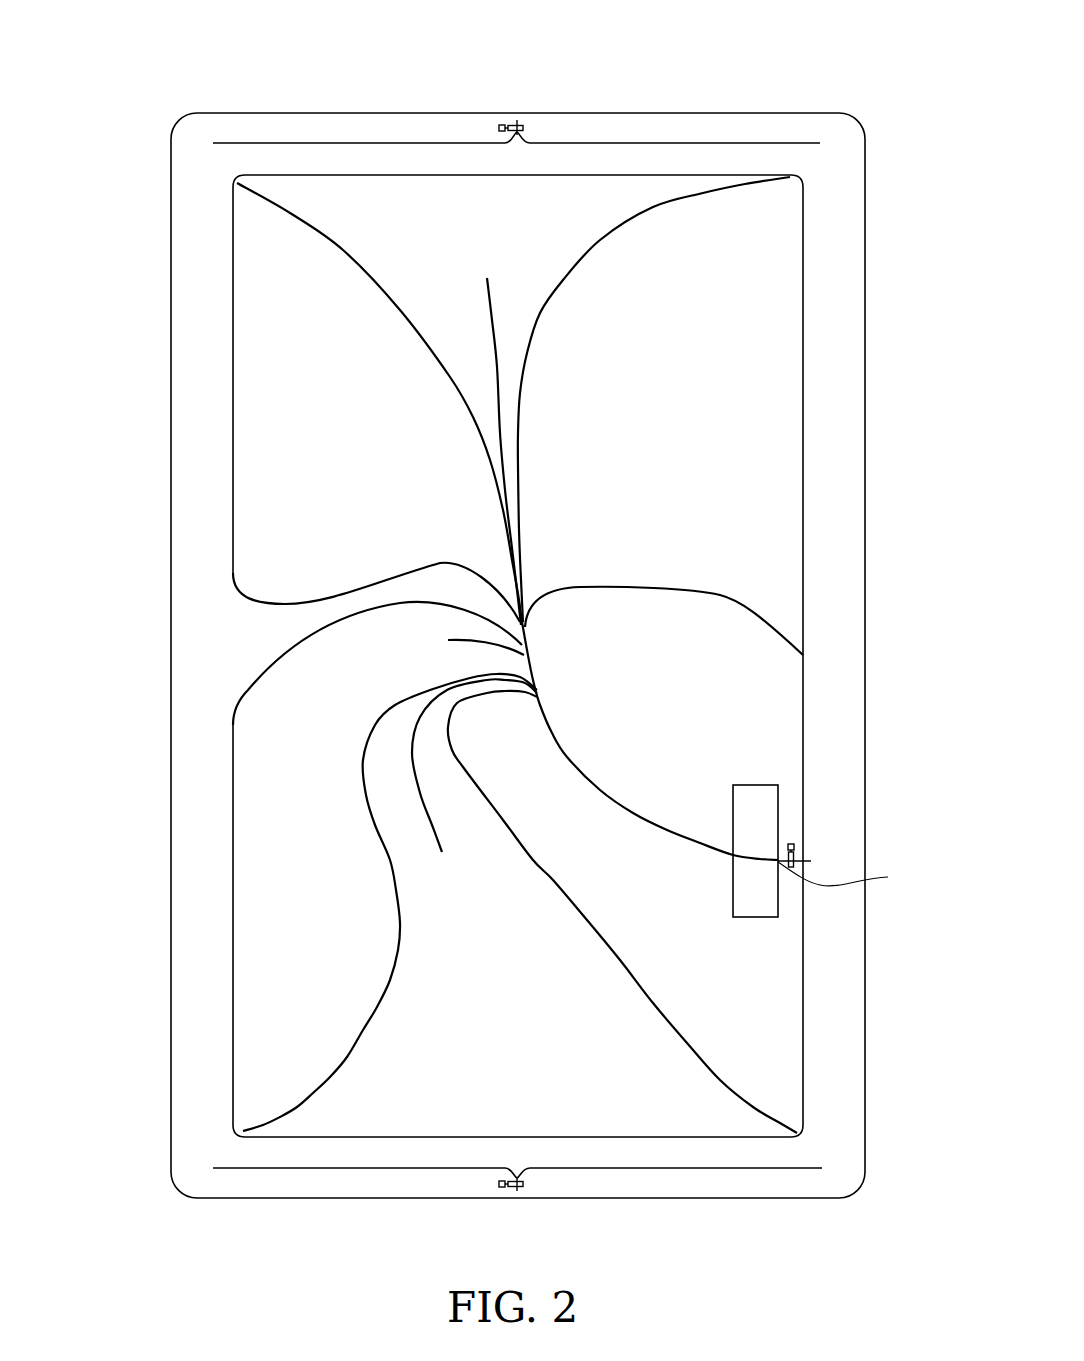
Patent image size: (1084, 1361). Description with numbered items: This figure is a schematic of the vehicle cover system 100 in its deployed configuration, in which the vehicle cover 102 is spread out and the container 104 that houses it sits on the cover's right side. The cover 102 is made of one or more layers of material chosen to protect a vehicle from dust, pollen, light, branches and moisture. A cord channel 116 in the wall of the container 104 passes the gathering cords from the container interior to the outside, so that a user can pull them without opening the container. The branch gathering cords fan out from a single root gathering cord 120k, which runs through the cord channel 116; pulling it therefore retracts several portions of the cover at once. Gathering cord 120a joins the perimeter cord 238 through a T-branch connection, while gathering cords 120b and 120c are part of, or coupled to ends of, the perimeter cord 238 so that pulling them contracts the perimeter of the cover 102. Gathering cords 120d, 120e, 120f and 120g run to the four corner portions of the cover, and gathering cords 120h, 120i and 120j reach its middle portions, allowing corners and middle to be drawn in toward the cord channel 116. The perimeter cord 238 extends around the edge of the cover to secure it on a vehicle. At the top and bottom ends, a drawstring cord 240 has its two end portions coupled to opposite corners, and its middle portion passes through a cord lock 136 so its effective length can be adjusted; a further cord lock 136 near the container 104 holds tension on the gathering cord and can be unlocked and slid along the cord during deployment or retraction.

The vehicle cover system 100 is at (165, 45).
The vehicle cover 102 is at (840, 292).
The container 104 is at (802, 798).
The cord channel 116 is at (859, 880).
The gathering cord 120a is at (750, 606).
The gathering cord 120b is at (233, 713).
The gathering cord 120c is at (240, 596).
The gathering cord 120d is at (342, 250).
The gathering cord 120e is at (697, 197).
The gathering cord 120f is at (747, 1100).
The gathering cord 120g is at (317, 1092).
The gathering cord 120h is at (493, 300).
The gathering cord 120i is at (448, 640).
The gathering cord 120j is at (427, 807).
The root gathering cord 120k is at (668, 833).
The cord lock 136 is at (490, 125).
The perimeter cord 238 is at (803, 1033).
The drawstring cord 240 is at (687, 143).